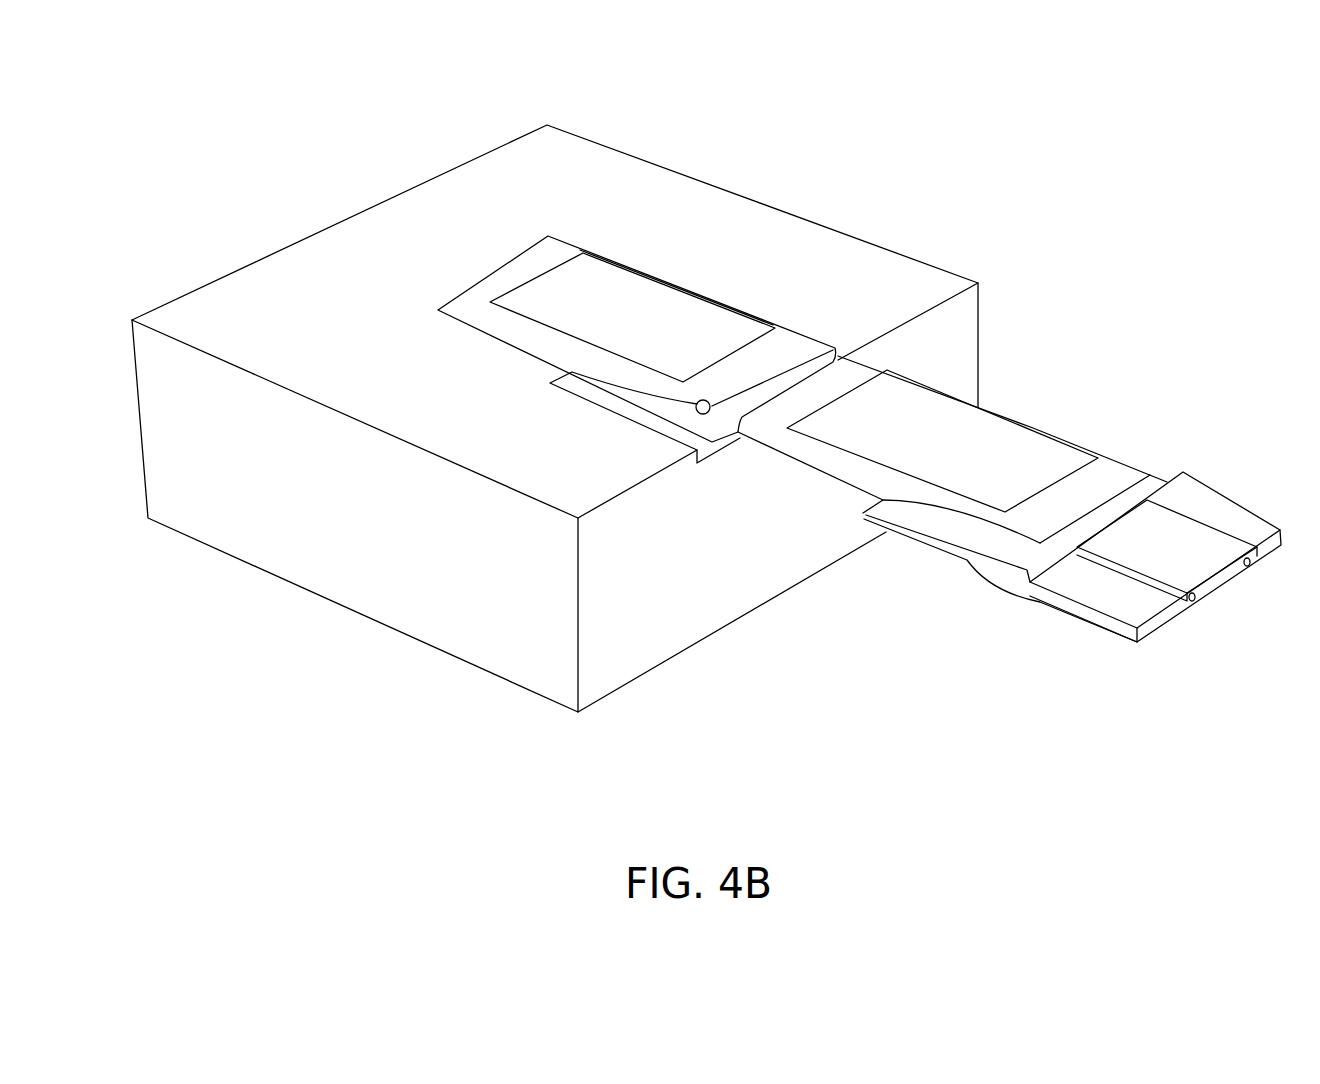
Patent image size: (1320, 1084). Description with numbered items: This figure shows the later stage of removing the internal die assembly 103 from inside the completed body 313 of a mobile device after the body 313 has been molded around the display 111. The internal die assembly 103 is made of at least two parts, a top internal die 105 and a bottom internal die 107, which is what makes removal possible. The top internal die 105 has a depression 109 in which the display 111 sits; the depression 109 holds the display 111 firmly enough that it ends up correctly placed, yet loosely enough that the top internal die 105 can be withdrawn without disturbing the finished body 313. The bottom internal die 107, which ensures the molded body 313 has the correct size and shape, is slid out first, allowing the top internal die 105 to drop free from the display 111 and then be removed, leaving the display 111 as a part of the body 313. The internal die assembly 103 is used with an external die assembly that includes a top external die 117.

The internal die assembly 103 is at (1280, 530).
The top internal die 105 is at (840, 398).
The bottom internal die 107 is at (1157, 557).
The depression 109 is at (988, 428).
The display 111 is at (645, 297).
The top external die 117 is at (957, 323).
The body 313 is at (521, 268).